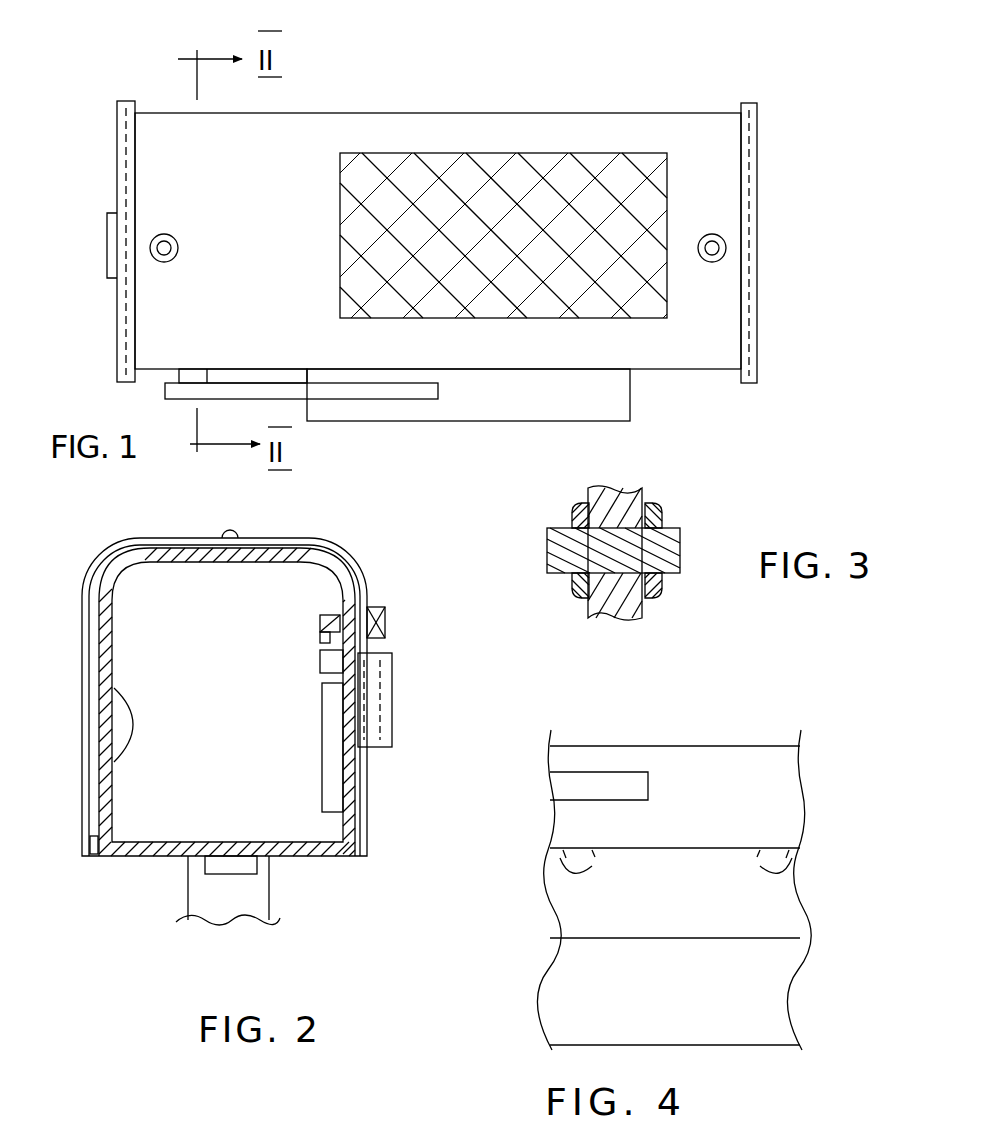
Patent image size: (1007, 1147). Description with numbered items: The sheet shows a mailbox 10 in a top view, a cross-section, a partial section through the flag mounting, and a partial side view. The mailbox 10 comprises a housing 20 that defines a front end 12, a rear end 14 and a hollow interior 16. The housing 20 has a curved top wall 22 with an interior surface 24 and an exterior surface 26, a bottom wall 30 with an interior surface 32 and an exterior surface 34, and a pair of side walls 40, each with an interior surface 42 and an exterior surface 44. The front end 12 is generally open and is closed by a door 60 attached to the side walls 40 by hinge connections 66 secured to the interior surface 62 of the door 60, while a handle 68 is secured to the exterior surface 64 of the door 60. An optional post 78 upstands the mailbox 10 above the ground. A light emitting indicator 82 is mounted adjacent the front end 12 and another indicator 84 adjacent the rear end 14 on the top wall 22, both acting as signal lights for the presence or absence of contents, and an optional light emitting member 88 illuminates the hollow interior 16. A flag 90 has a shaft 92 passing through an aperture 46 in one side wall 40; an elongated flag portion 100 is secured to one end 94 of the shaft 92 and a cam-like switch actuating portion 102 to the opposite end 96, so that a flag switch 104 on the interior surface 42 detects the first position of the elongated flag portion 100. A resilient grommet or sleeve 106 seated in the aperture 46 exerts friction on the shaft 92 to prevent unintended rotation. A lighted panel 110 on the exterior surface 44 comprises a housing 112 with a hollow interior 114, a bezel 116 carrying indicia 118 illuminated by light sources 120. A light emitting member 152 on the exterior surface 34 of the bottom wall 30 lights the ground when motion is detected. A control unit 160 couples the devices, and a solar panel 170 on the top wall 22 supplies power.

In FIG. 1, the mailbox 10 is at (542, 49).
In FIG. 1, the front end 12 is at (121, 68).
In FIG. 1, the rear end 14 is at (768, 72).
In FIG. 2, the hollow interior 16 is at (223, 705).
In FIG. 1, the housing 20 is at (429, 80).
In FIG. 4, the housing 20 is at (704, 736).
In FIG. 2, the top wall 22 is at (296, 548).
In FIG. 2, the interior surface of top wall 24 is at (165, 562).
In FIG. 2, the exterior surface of top wall 26 is at (163, 545).
In FIG. 2, the bottom wall 30 is at (328, 855).
In FIG. 2, the interior surface of bottom wall 32 is at (148, 842).
In FIG. 2, the exterior surface of bottom wall 34 is at (148, 856).
In FIG. 2, the side wall 40 is at (99, 638).
In FIG. 3, the side wall 40 is at (630, 500).
In FIG. 2, the interior surface of side wall 42 is at (112, 668).
In FIG. 2, the exterior surface of side wall 44 is at (99, 683).
In FIG. 3, the aperture 46 is at (603, 528).
In FIG. 1, the door 60 is at (117, 352).
In FIG. 2, the interior surface of door 62 is at (95, 796).
In FIG. 1, the exterior surface of door 64 is at (117, 170).
In FIG. 2, the hinge connection 66 is at (86, 858).
In FIG. 1, the handle 68 is at (107, 247).
In FIG. 2, the post 78 is at (200, 910).
In FIG. 1, the light emitting member or indicator 82 is at (172, 235).
In FIG. 1, the light emitting member or indicator 84 is at (712, 263).
In FIG. 2, the light emitting member 88 is at (140, 738).
In FIG. 1, the flag 90 is at (399, 431).
In FIG. 2, the flag 90 is at (406, 590).
In FIG. 1, the shaft 92 is at (200, 383).
In FIG. 3, the shaft 92 is at (676, 545).
In FIG. 2, the end of shaft 94 is at (380, 626).
In FIG. 2, the opposite end of shaft 96 is at (337, 615).
In FIG. 1, the elongated flag portion 100 is at (368, 393).
In FIG. 2, the elongated flag portion 100 is at (380, 622).
In FIG. 4, the elongated flag portion 100 is at (602, 788).
In FIG. 2, the switch actuating portion 102 is at (322, 628).
In FIG. 2, the flag switch 104 is at (320, 665).
In FIG. 3, the resilient grommet or sleeve 106 is at (650, 598).
In FIG. 1, the lighted panel 110 is at (487, 431).
In FIG. 4, the lighted panel 110 is at (545, 962).
In FIG. 1, the housing 112 is at (631, 398).
In FIG. 1, the hollow interior 114 is at (506, 404).
In FIG. 2, the hollow interior 114 is at (380, 742).
In FIG. 2, the bezel 116 is at (392, 703).
In FIG. 4, the bezel 116 is at (790, 896).
In FIG. 4, the indicia 118 is at (682, 947).
In FIG. 4, the light source 120 is at (566, 874).
In FIG. 2, the light emitting member 152 is at (230, 875).
In FIG. 2, the control unit 160 is at (322, 776).
In FIG. 1, the solar panel 170 is at (603, 153).